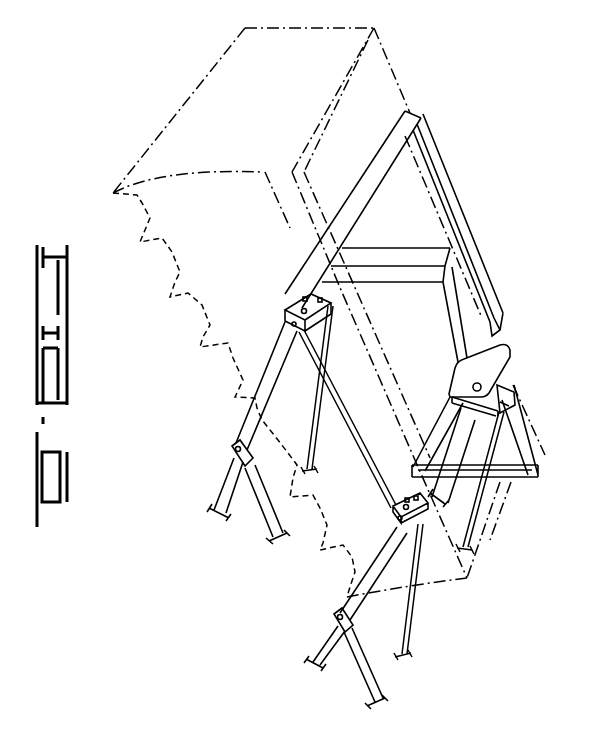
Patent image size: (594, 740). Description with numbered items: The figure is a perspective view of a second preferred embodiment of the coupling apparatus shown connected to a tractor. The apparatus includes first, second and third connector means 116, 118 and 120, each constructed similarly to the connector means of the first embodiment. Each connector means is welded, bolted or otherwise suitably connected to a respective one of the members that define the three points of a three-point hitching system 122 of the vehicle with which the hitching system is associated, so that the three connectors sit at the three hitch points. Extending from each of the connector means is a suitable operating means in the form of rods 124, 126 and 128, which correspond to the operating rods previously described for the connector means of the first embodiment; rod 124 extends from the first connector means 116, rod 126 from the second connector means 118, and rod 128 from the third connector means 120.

The first connector means 116 is at (292, 307).
The second connector means 118 is at (394, 505).
The third connector means 120 is at (504, 413).
The three-point hitching system 122 is at (223, 454).
The rod 124 is at (312, 398).
The rod 126 is at (408, 623).
The rod 128 is at (476, 518).